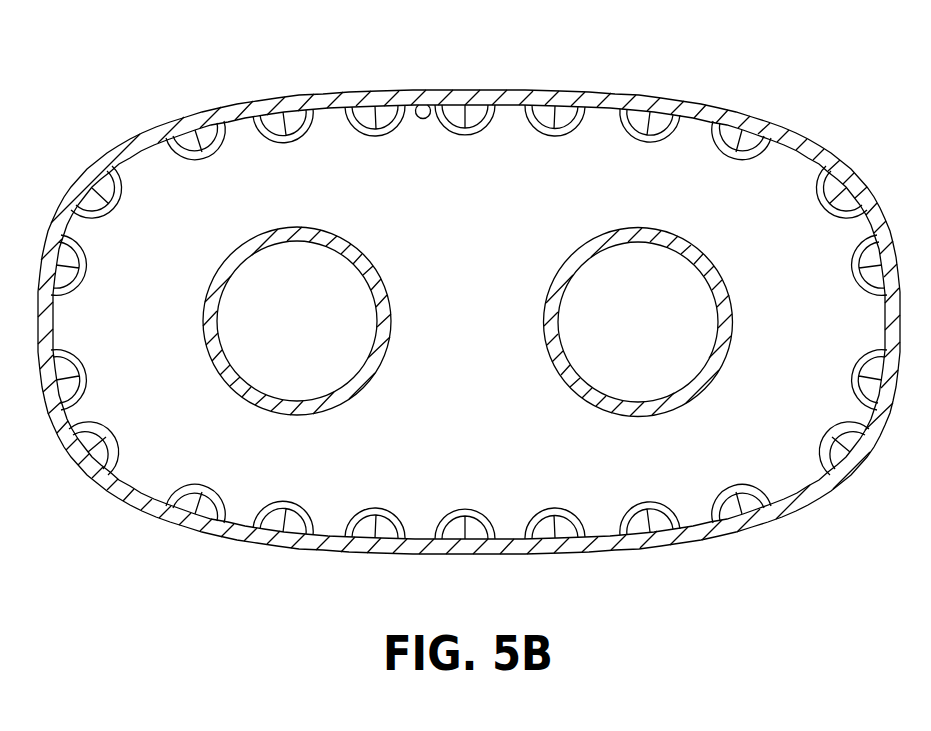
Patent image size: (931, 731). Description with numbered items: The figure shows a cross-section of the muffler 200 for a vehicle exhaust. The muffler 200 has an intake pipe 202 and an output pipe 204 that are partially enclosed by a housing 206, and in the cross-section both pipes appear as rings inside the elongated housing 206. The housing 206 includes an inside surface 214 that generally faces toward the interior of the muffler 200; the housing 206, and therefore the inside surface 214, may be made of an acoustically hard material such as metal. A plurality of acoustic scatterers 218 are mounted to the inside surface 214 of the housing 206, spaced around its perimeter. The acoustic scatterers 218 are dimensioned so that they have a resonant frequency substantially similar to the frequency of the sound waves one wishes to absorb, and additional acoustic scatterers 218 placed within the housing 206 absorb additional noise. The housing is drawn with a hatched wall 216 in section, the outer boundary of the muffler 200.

The muffler 200 is at (469, 285).
The intake pipe 202 is at (364, 252).
The output pipe 204 is at (543, 355).
The housing 206 is at (240, 108).
The inside surface 214 is at (426, 93).
The outer wall 216 is at (328, 92).
The acoustic scatterers 218 is at (469, 322).